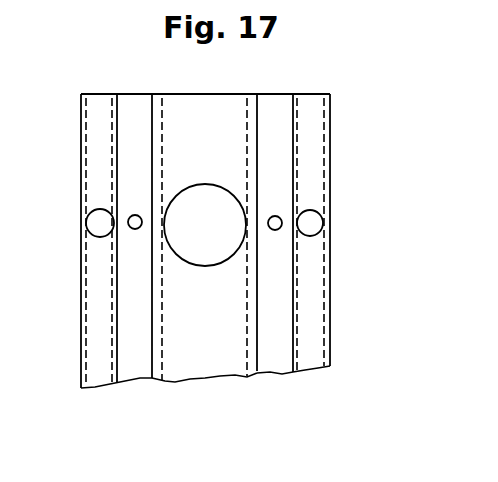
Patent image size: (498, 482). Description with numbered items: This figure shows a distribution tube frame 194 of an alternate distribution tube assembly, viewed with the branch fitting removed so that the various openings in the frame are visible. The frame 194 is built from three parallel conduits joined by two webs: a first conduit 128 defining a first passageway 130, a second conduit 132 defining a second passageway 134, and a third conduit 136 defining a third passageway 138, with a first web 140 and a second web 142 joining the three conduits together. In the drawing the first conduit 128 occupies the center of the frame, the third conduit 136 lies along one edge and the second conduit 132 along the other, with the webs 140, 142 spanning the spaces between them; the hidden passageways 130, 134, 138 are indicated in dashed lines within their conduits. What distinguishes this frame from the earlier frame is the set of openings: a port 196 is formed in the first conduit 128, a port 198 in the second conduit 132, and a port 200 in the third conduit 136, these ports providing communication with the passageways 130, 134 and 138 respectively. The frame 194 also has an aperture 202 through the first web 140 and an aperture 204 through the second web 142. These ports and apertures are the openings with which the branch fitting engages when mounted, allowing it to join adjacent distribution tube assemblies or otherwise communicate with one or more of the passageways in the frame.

The distribution tube frame 194 is at (332, 127).
The third conduit 136 is at (97, 105).
The third passageway 138 is at (97, 388).
The second web 142 is at (135, 106).
The first conduit 128 is at (228, 110).
The first passageway 130 is at (193, 368).
The first web 140 is at (272, 368).
The second conduit 132 is at (320, 305).
The second passageway 134 is at (315, 360).
The port 196 is at (174, 243).
The port 200 is at (97, 235).
The aperture 204 is at (130, 216).
The aperture 202 is at (282, 216).
The port 198 is at (317, 233).